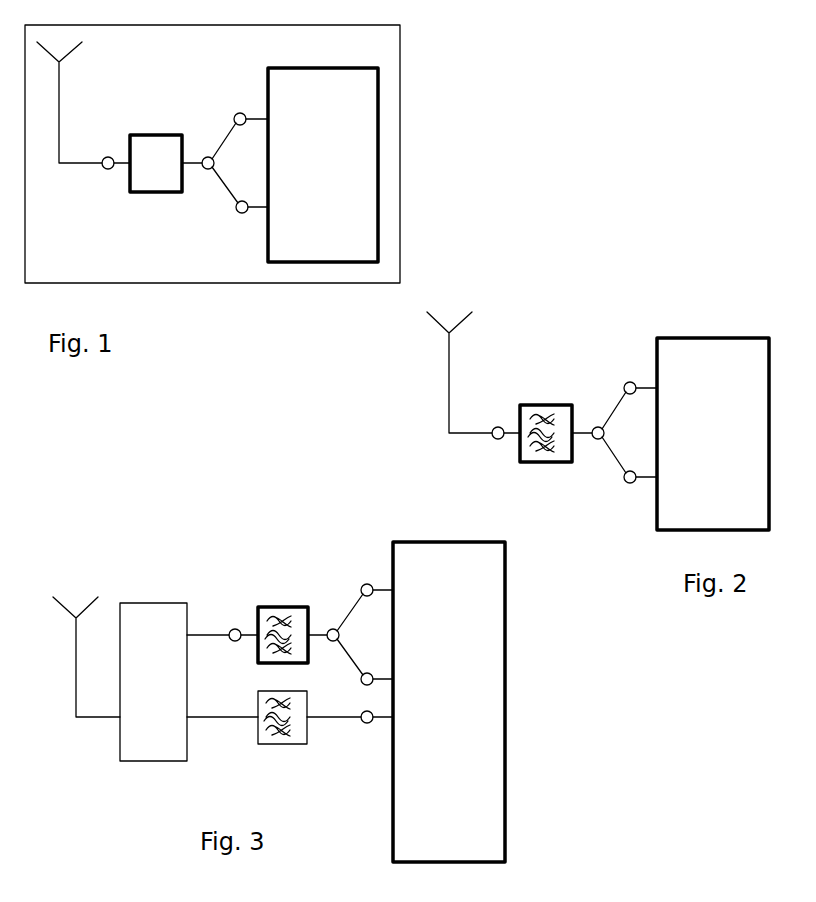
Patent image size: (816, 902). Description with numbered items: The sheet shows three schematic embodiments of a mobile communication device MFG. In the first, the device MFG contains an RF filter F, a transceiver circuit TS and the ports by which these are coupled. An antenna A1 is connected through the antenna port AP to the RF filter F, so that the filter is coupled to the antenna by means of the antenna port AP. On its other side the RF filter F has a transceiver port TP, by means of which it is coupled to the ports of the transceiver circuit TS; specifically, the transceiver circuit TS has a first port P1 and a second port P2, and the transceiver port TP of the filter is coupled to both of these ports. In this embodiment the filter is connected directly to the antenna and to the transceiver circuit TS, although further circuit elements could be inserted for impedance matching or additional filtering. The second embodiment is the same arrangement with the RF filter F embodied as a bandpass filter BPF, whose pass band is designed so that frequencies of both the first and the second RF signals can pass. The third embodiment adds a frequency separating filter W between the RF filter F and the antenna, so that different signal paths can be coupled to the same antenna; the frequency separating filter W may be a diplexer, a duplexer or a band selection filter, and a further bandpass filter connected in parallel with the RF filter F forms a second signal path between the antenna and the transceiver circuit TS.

In FIG. 1, the mobile communication device MFG is at (400, 83).
In FIG. 1, the antenna A1 is at (60, 85).
In FIG. 1, the antenna port AP is at (108, 169).
In FIG. 1, the RF filter F is at (153, 133).
In FIG. 2, the RF filter F is at (562, 389).
In FIG. 3, the RF filter F is at (268, 605).
In FIG. 1, the transceiver port TP is at (205, 169).
In FIG. 1, the first port P1 is at (240, 113).
In FIG. 1, the second port P2 is at (242, 213).
In FIG. 1, the transceiver circuit TS is at (378, 165).
In FIG. 3, the transceiver circuit TS is at (505, 635).
In FIG. 2, the bandpass filter BPF is at (553, 403).
In FIG. 3, the frequency separating filter W is at (147, 762).